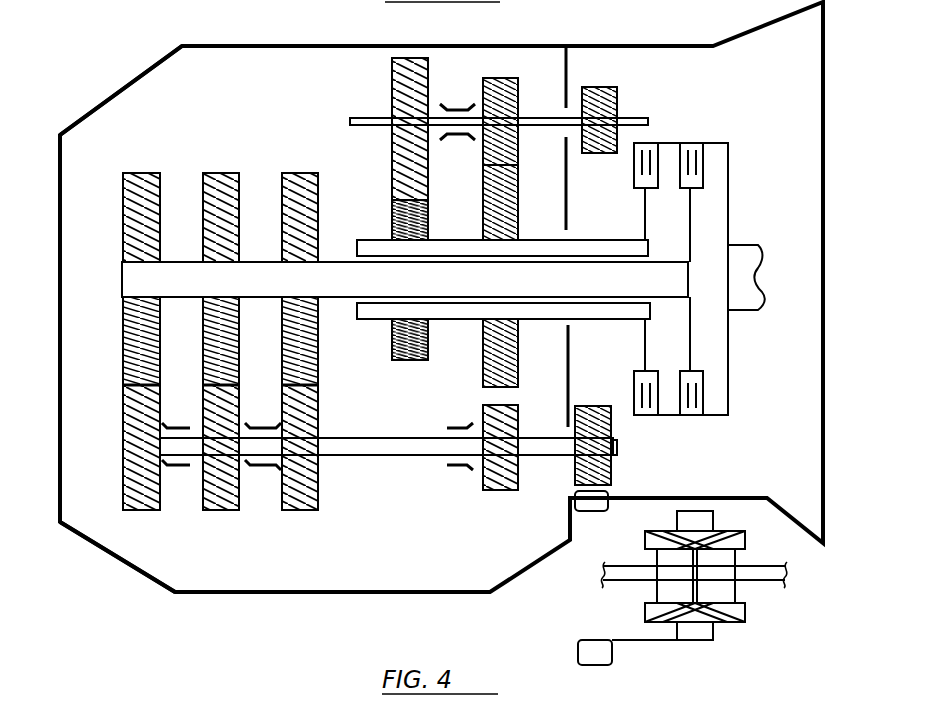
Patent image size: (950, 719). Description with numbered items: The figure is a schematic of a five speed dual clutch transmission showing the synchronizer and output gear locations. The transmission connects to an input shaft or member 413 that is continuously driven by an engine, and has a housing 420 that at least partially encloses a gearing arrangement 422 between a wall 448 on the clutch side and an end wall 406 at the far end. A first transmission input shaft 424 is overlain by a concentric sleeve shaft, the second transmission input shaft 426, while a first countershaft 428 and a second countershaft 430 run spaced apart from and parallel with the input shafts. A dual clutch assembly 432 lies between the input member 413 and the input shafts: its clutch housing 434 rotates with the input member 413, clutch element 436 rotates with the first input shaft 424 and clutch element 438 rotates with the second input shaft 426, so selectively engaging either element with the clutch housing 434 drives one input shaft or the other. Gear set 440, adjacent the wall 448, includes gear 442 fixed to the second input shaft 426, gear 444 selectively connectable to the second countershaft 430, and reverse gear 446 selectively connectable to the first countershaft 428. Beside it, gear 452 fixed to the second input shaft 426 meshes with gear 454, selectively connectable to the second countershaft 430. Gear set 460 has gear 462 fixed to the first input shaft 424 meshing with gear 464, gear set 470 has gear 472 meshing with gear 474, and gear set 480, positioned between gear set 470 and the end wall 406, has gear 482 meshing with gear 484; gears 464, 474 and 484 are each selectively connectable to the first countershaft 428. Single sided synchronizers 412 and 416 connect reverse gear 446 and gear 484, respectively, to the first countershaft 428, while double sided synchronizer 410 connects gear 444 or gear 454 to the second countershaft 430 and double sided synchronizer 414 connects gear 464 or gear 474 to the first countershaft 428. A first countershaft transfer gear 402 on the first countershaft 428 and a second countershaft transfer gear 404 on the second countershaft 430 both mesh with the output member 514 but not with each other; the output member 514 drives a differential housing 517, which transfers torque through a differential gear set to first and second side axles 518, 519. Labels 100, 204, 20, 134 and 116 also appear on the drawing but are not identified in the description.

The transmission 100 is at (670, 39).
The housing wall 204 is at (656, 26).
The housing 420 is at (101, 105).
The gearing arrangement 422 is at (231, 65).
The end wall 406 is at (102, 549).
The wall 448 is at (566, 163).
The first transmission input shaft 424 is at (122, 268).
The second transmission input shaft 426 is at (630, 240).
The second countershaft 430 is at (392, 119).
The first countershaft 428 is at (385, 437).
The co-planar gear set 480 is at (122, 310).
The gear 482 is at (123, 197).
The gear 484 is at (123, 478).
The co-planar gear set 470 is at (203, 319).
The gear 472 is at (203, 197).
The gear 474 is at (203, 500).
The co-planar gear set 460 is at (281, 325).
The gear 462 is at (282, 197).
The gear 464 is at (282, 510).
The gear train 20 is at (112, 359).
The synchronizer assembly 416 is at (183, 425).
The synchronizer assembly 414 is at (263, 425).
The synchronizer assembly 412 is at (455, 428).
The synchronizer assembly 410 is at (458, 141).
The gear 454 is at (392, 178).
The gear 452 is at (392, 224).
The co-planar gear set 440 is at (521, 218).
The gear 444 is at (518, 138).
The gear 442 is at (518, 190).
The reverse gear 446 is at (483, 488).
The second countershaft transfer gear 404 is at (617, 88).
The first countershaft transfer gear 402 is at (583, 407).
The dual clutch assembly 432 is at (715, 279).
The clutch housing 434 is at (728, 143).
The clutch base 134 is at (704, 418).
The second clutch element 438 is at (648, 323).
The first clutch element 436 is at (690, 347).
The input shaft 413 is at (748, 312).
The pump 116 is at (718, 570).
The differential housing 517 is at (715, 520).
The first side axle 518 is at (787, 580).
The second side axle 519 is at (605, 572).
The output gear 514 is at (592, 512).